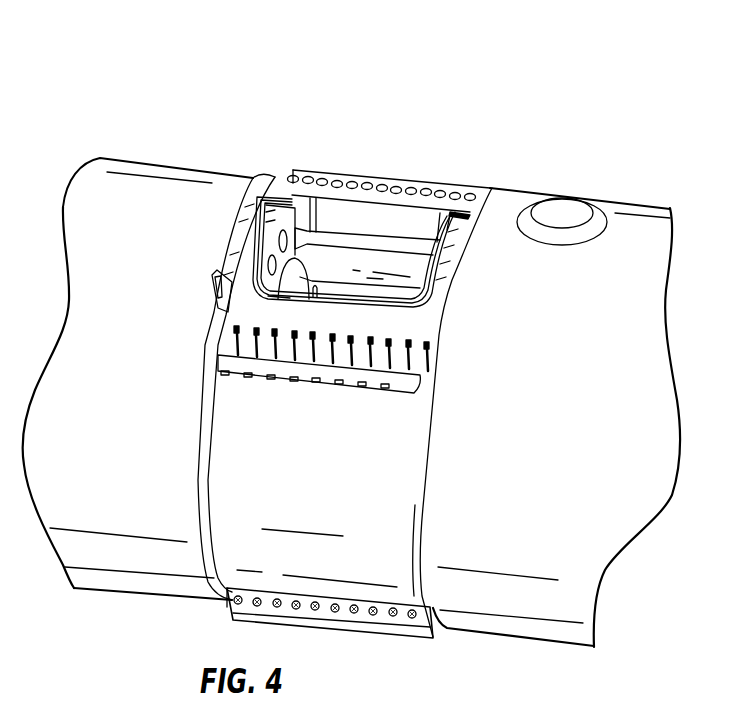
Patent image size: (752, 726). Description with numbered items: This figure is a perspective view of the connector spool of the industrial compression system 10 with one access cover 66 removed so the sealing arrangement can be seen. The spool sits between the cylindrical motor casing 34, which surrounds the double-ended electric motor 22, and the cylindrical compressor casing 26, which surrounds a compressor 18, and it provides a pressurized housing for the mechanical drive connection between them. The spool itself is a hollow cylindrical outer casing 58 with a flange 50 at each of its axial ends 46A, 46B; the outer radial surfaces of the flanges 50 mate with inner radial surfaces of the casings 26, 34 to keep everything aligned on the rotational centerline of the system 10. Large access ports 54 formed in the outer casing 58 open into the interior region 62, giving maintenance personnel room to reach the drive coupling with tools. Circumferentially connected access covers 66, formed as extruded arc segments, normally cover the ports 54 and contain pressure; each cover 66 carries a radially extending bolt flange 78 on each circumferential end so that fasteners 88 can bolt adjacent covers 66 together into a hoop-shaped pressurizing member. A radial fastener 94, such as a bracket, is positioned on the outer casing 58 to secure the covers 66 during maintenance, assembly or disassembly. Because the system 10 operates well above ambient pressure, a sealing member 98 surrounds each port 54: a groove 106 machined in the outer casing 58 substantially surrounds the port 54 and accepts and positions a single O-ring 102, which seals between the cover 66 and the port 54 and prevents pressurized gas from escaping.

The industrial compression system 10 is at (154, 62).
The motor casing 34 is at (163, 200).
The motor 22 is at (206, 163).
The compressor 18 is at (270, 178).
The compressor casing 26 is at (627, 227).
The flange 78 is at (437, 187).
The fasteners 88 is at (316, 180).
The O-ring 102 is at (432, 280).
The groove 106 is at (440, 268).
The axial end 46B is at (240, 263).
The flange 50 is at (279, 239).
The axial end 46A is at (443, 245).
The interior region 62 is at (395, 222).
The sealing member 98 is at (435, 304).
The radial fastener 94 is at (212, 290).
The access port 54 is at (295, 300).
The outer casing 58 is at (424, 334).
The access cover 66 is at (357, 172).